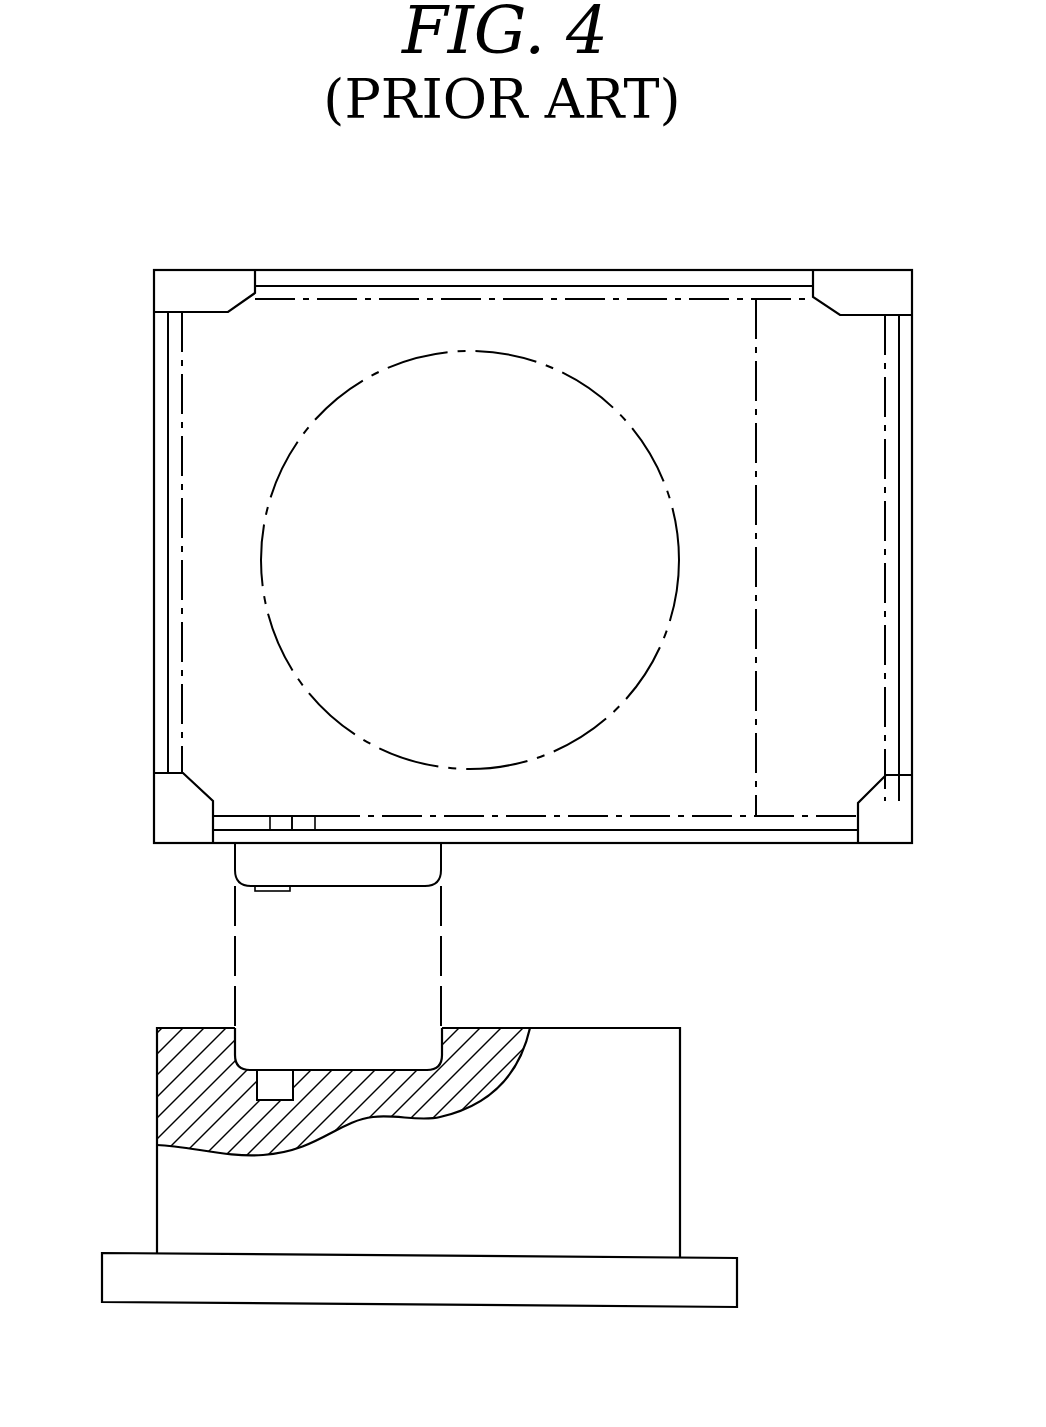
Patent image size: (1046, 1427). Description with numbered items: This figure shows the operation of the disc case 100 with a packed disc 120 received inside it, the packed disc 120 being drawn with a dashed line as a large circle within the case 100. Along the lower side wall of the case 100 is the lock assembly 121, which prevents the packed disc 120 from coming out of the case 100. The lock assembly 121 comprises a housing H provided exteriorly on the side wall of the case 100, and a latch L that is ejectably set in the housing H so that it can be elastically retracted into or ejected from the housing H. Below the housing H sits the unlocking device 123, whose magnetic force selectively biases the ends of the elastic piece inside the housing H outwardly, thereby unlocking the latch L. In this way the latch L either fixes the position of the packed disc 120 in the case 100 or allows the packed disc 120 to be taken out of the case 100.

The case 100 is at (663, 270).
The packed disc 120 is at (731, 816).
The lock assembly 121 is at (217, 861).
The unlocking device 123 is at (650, 1125).
The housing H is at (428, 860).
The latch L is at (285, 891).